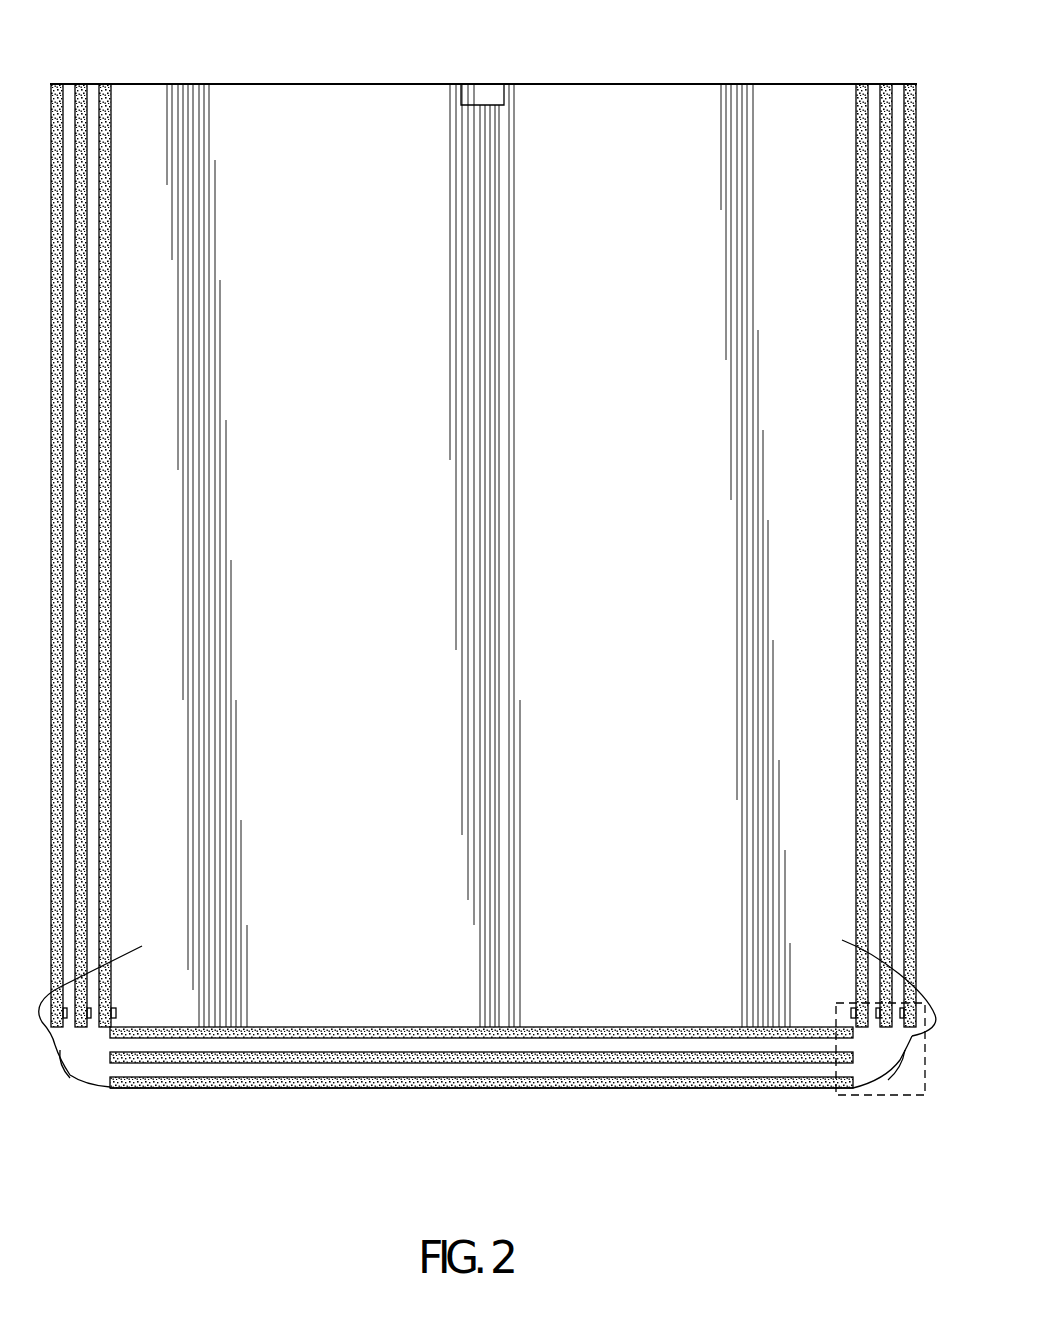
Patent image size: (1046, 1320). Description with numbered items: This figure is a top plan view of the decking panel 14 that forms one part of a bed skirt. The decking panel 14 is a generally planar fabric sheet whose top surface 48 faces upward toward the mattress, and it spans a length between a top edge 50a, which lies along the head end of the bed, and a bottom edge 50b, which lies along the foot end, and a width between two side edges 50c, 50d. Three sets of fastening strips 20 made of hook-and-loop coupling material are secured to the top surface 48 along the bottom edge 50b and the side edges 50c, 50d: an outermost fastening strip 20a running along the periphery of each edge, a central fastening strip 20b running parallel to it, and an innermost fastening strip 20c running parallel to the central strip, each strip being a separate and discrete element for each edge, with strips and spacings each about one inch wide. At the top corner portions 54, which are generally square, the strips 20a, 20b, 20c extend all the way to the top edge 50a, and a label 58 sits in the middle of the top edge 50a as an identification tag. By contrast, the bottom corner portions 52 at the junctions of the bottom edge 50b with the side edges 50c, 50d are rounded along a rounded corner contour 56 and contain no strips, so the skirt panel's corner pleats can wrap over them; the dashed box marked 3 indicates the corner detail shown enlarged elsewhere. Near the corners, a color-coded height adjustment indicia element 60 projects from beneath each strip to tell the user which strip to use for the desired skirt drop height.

The decking panel 14 is at (793, 69).
The top corner portions 54 is at (92, 82).
The label 58 is at (479, 92).
The top edge 50a is at (598, 84).
The top surface 48 is at (405, 598).
The fastening strips 20 is at (483, 611).
The outermost fastening strip 20a is at (908, 182).
The central fastening strip 20b is at (885, 228).
The innermost fastening strip 20c is at (862, 265).
The height adjustment indicia element 60 is at (117, 1012).
The side edge 50c is at (103, 984).
The side edge 50d is at (868, 979).
The bottom corner portions 52 is at (72, 1054).
The rounded corner contour 56 is at (75, 1078).
The bottom edge 50b is at (108, 1088).
The detail view reference 3 is at (836, 1095).